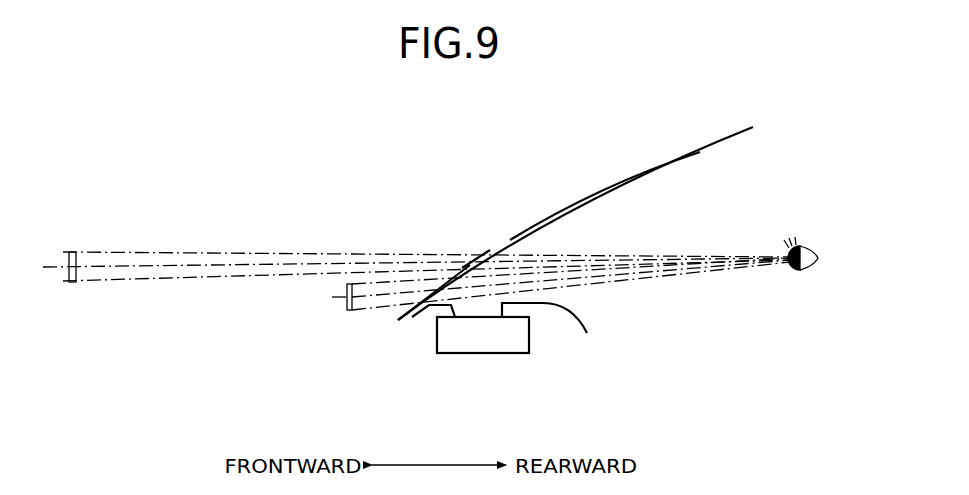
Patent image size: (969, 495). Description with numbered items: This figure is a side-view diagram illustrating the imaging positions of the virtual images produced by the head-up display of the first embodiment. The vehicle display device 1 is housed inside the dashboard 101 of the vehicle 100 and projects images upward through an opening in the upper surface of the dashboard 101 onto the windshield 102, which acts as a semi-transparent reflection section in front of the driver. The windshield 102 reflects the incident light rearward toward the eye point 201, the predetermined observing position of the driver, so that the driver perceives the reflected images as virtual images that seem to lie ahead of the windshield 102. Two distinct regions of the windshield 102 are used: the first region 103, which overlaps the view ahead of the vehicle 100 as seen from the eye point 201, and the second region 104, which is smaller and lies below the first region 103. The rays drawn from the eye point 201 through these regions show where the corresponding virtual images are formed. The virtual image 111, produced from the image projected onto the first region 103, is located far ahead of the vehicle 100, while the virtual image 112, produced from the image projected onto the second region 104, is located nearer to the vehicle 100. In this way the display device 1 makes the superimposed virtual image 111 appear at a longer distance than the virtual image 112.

The vehicle display device 1 is at (471, 357).
The vehicle 100 is at (696, 132).
The dashboard 101 is at (543, 299).
The windshield 102 is at (588, 197).
The first region 103 is at (474, 256).
The second region 104 is at (434, 287).
The virtual image 111 is at (72, 249).
The virtual image 112 is at (349, 313).
The eye point 201 is at (806, 239).